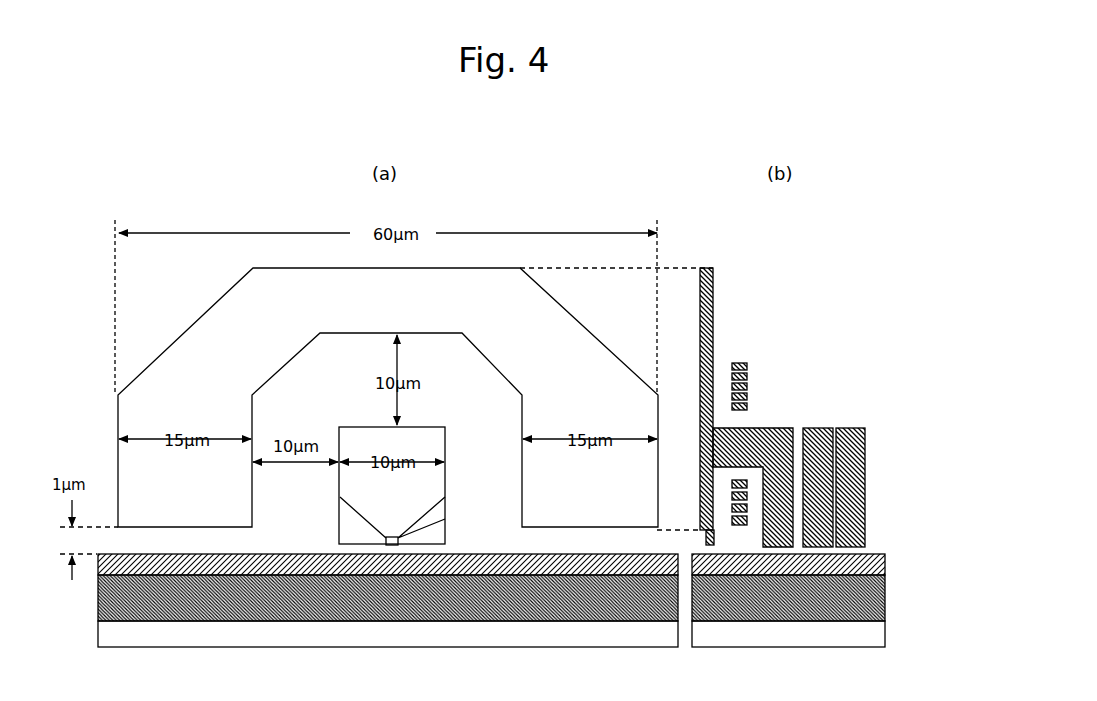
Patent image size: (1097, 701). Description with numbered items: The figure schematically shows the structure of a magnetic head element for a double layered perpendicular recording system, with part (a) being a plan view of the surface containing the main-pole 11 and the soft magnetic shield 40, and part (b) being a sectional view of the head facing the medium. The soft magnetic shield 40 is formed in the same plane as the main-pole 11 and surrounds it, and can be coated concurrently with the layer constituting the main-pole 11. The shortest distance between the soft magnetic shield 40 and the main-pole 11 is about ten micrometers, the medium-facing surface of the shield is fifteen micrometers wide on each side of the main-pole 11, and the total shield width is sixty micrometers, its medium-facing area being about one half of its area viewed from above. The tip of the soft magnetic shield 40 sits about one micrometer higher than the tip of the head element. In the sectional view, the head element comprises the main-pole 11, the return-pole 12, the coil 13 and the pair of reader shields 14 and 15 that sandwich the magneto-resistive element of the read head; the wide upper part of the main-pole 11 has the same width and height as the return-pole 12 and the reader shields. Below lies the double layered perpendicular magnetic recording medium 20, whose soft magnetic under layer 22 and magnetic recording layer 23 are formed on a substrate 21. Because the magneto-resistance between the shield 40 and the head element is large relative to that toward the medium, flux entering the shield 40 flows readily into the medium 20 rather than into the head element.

The soft magnetic shield 40 is at (235, 297).
The main-pole 11 is at (705, 542).
The return-pole 12 is at (781, 432).
The coil 13 is at (746, 378).
The reader shield 14 is at (860, 430).
The reader shield 15 is at (833, 428).
The double layered perpendicular magnetic recording medium 20 is at (519, 604).
The substrate 21 is at (312, 640).
The soft magnetic under layer 22 is at (270, 612).
The magnetic recording layer 23 is at (322, 557).